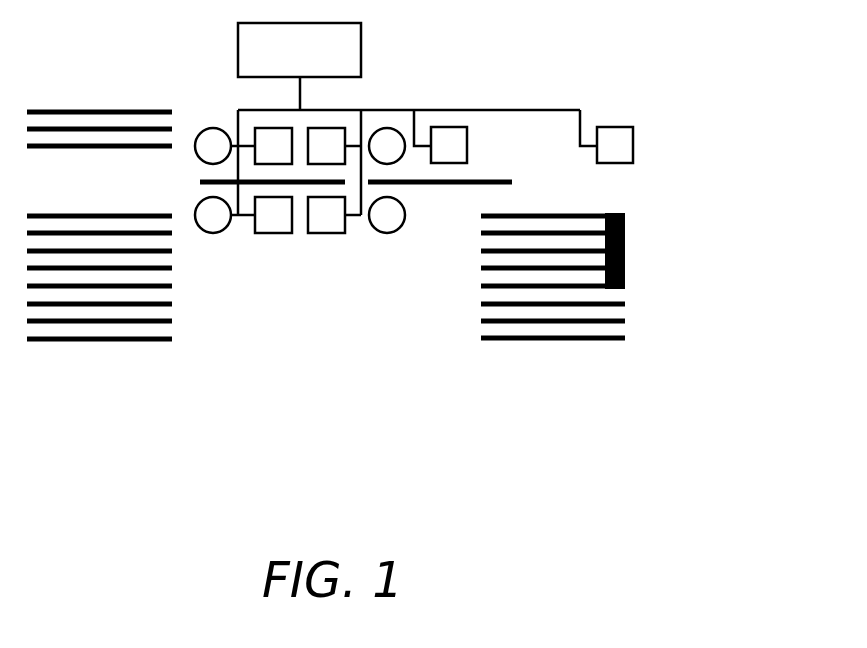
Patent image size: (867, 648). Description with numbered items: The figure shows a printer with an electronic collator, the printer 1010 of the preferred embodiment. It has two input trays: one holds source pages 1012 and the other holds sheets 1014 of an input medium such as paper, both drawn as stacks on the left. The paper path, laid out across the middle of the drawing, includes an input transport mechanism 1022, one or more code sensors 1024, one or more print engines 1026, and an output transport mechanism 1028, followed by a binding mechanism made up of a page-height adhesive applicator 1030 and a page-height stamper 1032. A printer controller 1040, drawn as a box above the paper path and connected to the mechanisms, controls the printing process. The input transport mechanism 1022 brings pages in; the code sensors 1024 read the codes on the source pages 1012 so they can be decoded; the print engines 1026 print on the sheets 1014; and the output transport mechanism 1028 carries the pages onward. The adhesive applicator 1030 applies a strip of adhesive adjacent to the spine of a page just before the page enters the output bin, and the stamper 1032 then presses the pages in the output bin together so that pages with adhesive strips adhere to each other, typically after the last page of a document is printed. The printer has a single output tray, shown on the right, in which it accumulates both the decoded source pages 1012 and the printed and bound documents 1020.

The print engine / printing system 1010 is at (427, 373).
The source pages 1012 is at (96, 110).
The sheets of input medium 1014 is at (97, 342).
The printed and bound documents 1020 is at (626, 252).
The input transport mechanism 1022 is at (211, 233).
The code sensors 1024 is at (276, 233).
The print engines 1026 is at (323, 233).
The output transport mechanism 1028 is at (387, 233).
The adhesive applicator 1030 is at (446, 127).
The stamper 1032 is at (611, 127).
The printer controller 1040 is at (409, 119).